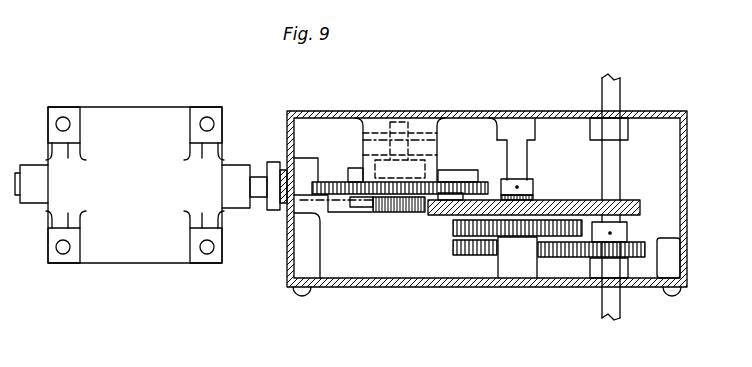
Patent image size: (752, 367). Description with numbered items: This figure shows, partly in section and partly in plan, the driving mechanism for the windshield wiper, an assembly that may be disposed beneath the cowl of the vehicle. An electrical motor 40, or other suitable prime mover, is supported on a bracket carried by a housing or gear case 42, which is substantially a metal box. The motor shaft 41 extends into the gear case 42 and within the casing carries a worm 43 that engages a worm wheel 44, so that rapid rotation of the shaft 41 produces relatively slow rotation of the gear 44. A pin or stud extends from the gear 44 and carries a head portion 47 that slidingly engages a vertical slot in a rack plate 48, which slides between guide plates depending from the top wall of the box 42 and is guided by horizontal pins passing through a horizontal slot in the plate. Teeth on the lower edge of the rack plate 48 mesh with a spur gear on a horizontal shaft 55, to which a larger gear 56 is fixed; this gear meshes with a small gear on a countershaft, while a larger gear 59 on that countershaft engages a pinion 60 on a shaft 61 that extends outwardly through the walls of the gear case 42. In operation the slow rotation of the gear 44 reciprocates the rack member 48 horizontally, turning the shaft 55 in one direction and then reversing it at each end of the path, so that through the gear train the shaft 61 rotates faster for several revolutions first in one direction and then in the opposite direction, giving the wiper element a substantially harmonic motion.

The electrical motor 40 is at (132, 185).
The shaft 41 is at (337, 182).
The housing or gear case 42 is at (472, 280).
The worm 43 is at (367, 207).
The worm wheel 44 is at (347, 195).
The head portion 47 is at (452, 227).
The rack plate 48 is at (578, 183).
The horizontal shaft 55 is at (530, 158).
The larger gear 56 is at (455, 241).
The larger gear 59 is at (456, 253).
The pinion 60 is at (640, 246).
The shaft 61 is at (612, 180).